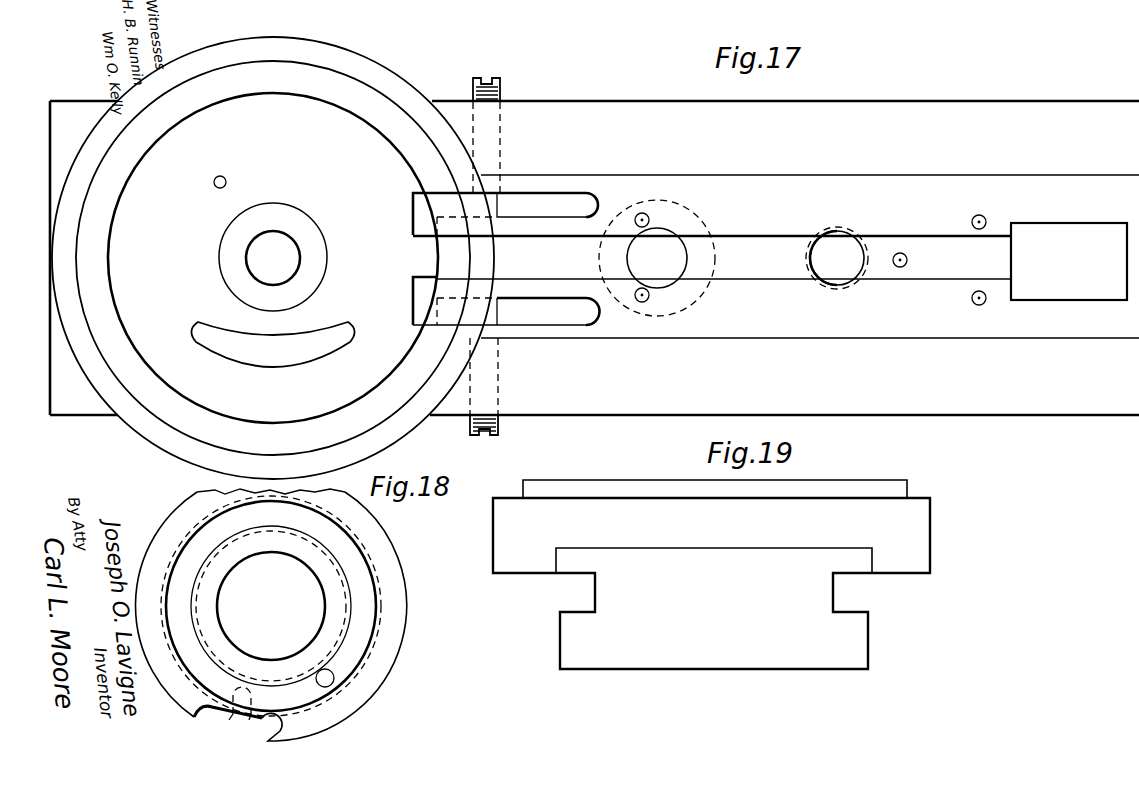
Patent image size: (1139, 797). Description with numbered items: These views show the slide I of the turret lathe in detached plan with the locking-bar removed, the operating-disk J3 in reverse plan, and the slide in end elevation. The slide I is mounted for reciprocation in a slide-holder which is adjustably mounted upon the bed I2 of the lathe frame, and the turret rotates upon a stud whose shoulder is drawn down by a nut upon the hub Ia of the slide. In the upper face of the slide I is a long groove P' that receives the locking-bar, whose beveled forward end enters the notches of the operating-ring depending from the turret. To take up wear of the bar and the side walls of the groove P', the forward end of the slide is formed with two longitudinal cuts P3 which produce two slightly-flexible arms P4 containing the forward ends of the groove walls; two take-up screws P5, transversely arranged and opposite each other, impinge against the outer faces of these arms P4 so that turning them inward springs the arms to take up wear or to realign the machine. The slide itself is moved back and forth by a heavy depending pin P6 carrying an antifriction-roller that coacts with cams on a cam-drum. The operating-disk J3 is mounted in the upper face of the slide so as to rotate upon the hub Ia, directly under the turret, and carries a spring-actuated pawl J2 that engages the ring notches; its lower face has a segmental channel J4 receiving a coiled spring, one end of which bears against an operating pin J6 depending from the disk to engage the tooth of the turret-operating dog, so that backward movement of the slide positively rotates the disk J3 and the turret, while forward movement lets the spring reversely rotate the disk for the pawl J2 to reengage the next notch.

In FIG. 17, the slide I is at (594, 258).
In FIG. 17, the hub of the slide Ia is at (278, 210).
In FIG. 19, the bed I2 is at (711, 574).
In FIG. 17, the spring-actuated pawl J2 is at (225, 177).
In FIG. 18, the operating-disk J3 is at (180, 668).
In FIG. 18, the segmental channel J4 is at (366, 602).
In FIG. 18, the operating pin J6 is at (331, 672).
In FIG. 17, the groove P' is at (792, 258).
In FIG. 17, the longitudinal cuts P3 is at (544, 197).
In FIG. 17, the flexible arms P4 is at (536, 231).
In FIG. 17, the take-up screws P5 is at (500, 93).
In FIG. 17, the depending pin P6 is at (862, 250).